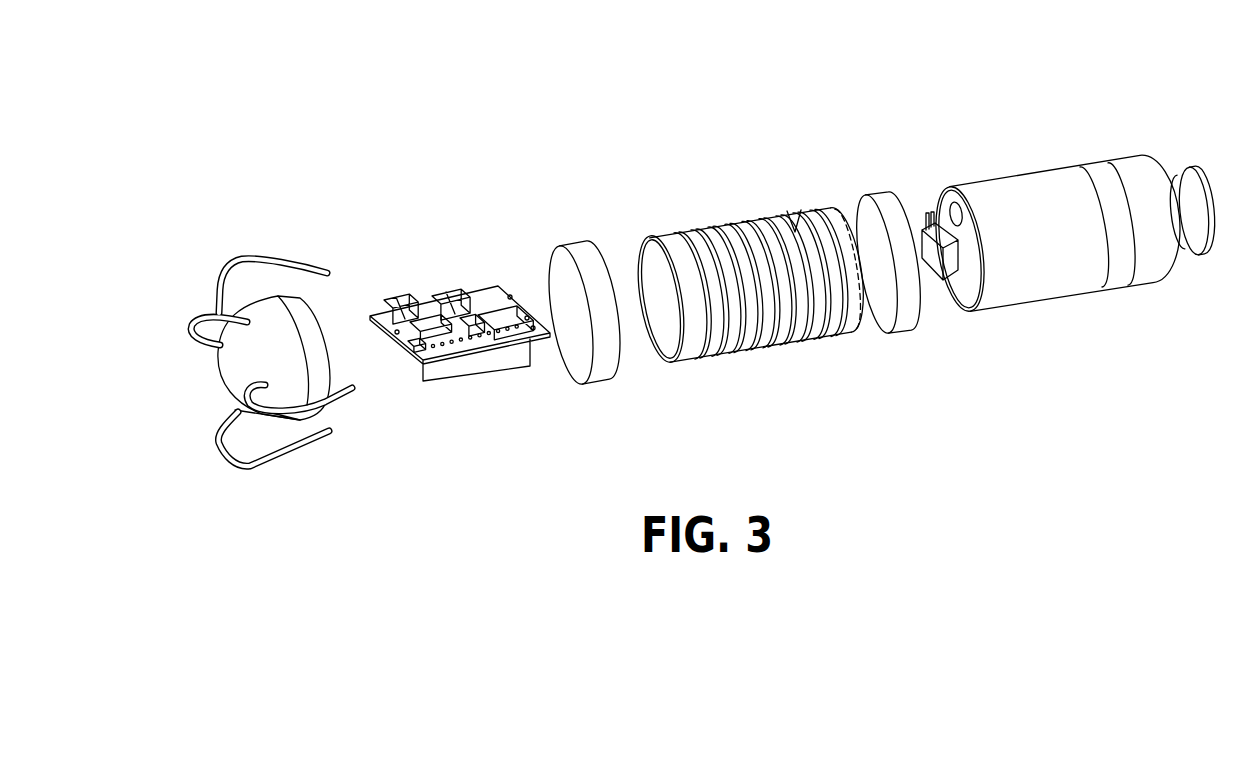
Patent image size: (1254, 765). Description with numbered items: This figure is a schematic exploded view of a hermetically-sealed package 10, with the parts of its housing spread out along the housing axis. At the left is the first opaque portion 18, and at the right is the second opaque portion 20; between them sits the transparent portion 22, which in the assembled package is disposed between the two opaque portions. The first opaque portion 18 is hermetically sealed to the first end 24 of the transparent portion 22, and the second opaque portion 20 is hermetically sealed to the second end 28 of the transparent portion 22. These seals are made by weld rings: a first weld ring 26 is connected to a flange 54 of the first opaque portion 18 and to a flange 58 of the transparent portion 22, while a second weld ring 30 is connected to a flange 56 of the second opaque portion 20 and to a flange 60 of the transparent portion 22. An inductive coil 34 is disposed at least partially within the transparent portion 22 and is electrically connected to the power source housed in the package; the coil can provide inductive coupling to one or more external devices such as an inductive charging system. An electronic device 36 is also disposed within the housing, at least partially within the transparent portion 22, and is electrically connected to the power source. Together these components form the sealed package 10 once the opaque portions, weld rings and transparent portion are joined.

The hermetically-sealed package 10 is at (643, 120).
The first opaque portion 18 is at (320, 310).
The flange 54 is at (316, 337).
The electronic device 36 is at (434, 274).
The first weld ring 26 is at (607, 384).
The transparent portion 22 is at (731, 208).
The first end 24 is at (643, 268).
The flange 58 is at (672, 363).
The inductive coil 34 is at (796, 208).
The flange 60 is at (840, 338).
The second end 28 is at (853, 313).
The second weld ring 30 is at (903, 328).
The second opaque portion 20 is at (992, 180).
The flange 56 is at (948, 183).